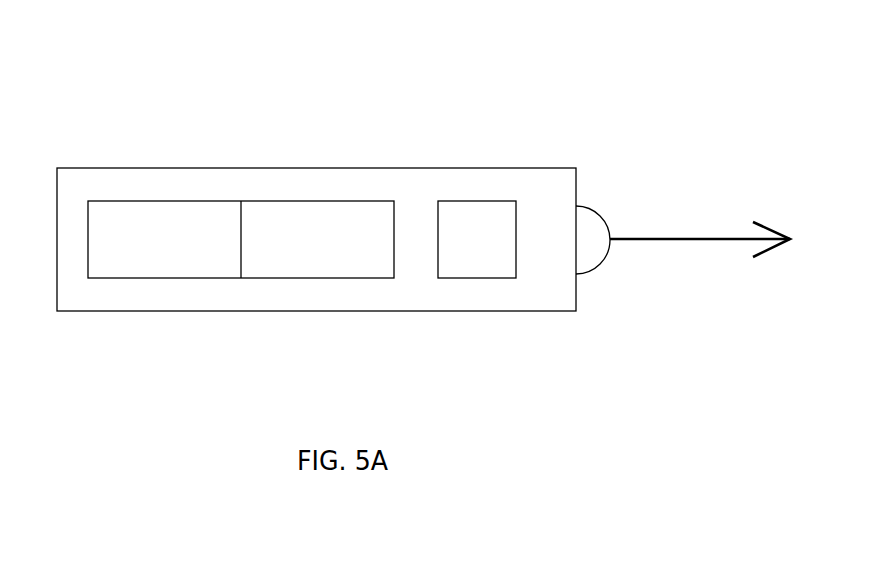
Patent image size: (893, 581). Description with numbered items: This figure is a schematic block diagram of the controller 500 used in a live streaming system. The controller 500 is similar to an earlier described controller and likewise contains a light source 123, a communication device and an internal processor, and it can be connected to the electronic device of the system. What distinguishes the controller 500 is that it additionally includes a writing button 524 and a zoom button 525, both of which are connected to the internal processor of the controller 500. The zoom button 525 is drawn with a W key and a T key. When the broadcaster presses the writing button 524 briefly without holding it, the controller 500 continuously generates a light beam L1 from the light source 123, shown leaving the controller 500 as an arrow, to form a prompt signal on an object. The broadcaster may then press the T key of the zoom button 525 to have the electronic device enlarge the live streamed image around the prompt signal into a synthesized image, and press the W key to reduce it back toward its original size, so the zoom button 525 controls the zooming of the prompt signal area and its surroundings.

The controller 500 is at (89, 49).
The zoom button 525 is at (305, 262).
The writing button 524 is at (477, 262).
The light source 123 is at (595, 230).
The light beam L1 is at (685, 238).